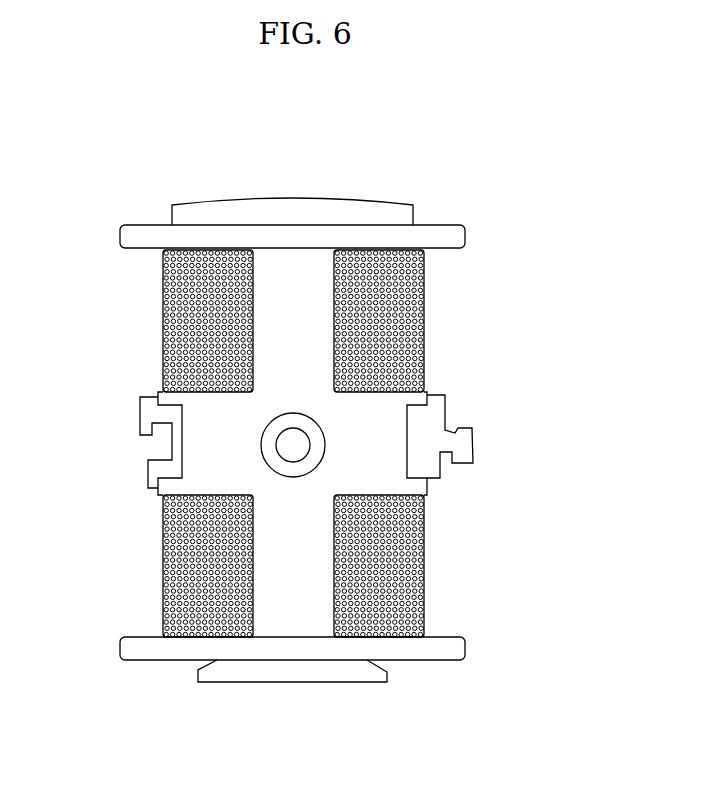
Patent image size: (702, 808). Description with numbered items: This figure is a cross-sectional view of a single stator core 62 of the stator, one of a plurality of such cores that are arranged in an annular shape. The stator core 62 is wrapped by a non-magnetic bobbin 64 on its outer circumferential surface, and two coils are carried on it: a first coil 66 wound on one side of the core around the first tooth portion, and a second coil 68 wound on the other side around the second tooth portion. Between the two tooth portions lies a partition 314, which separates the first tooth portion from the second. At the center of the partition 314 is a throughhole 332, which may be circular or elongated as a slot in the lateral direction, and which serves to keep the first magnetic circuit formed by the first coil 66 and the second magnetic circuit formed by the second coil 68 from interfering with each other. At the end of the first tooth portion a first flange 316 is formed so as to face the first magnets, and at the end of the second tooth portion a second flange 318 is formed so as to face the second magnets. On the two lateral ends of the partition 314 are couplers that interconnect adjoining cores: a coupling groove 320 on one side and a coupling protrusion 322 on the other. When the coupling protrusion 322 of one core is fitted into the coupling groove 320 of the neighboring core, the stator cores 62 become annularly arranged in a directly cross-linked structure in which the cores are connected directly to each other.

The stator core 62 is at (446, 187).
The non-magnetic bobbin 64 is at (303, 558).
The first coil 66 is at (410, 598).
The second coil 68 is at (405, 308).
The partition 314 is at (435, 412).
The first flange 316 is at (343, 683).
The second flange 318 is at (292, 200).
The coupling groove 320 is at (165, 460).
The coupling protrusion 322 is at (470, 448).
The throughhole 332 is at (295, 447).